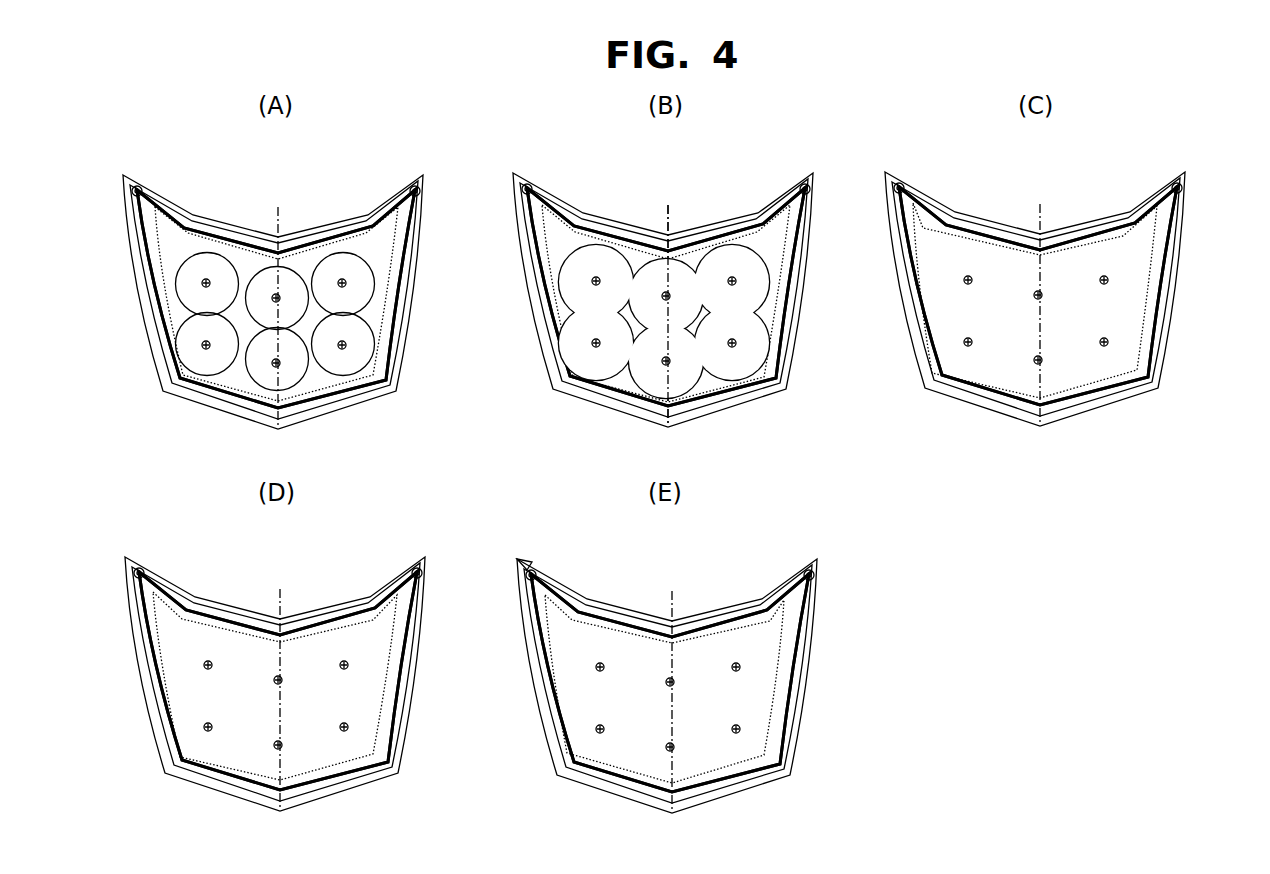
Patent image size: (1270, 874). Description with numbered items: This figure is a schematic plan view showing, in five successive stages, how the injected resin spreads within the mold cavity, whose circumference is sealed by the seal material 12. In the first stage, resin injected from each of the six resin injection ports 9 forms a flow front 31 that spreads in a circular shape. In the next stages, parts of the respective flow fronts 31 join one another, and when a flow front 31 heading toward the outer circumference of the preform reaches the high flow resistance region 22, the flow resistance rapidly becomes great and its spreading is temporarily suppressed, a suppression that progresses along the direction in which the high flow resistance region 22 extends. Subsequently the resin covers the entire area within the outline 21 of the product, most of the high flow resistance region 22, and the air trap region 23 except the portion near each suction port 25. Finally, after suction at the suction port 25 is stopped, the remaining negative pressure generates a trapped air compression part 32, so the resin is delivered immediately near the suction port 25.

The resin injection port 9 is at (207, 283).
The seal material 12 is at (412, 368).
The outline of the product 21 is at (396, 281).
The high flow resistance region 22 is at (388, 312).
The air trap region 23 is at (400, 334).
The suction port 25 is at (147, 187).
The flow front 31 is at (358, 256).
The trapped air compression part 32 is at (533, 574).